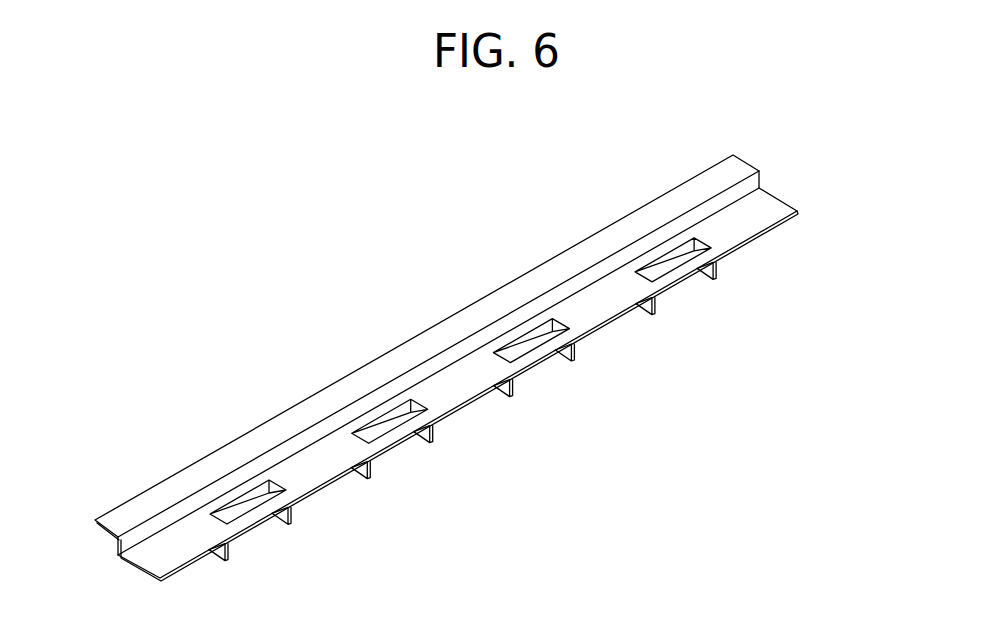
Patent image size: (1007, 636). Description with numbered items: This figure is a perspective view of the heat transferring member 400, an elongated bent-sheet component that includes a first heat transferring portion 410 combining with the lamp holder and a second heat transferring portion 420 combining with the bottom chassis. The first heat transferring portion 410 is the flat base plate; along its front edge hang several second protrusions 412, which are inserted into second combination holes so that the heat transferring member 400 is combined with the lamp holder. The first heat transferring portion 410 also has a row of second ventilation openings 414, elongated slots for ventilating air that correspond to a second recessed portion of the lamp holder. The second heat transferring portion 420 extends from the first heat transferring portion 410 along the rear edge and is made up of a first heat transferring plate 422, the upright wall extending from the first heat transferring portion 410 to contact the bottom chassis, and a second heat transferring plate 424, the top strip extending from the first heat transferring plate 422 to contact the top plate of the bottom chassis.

The heat transferring member 400 is at (389, 280).
The first heat transferring portion 410 is at (760, 220).
The second protrusion 412 is at (705, 273).
The second ventilation opening 414 is at (666, 265).
The second heat transferring portion 420 is at (878, 127).
The first heat transferring plate 422 is at (750, 183).
The second heat transferring plate 424 is at (747, 158).